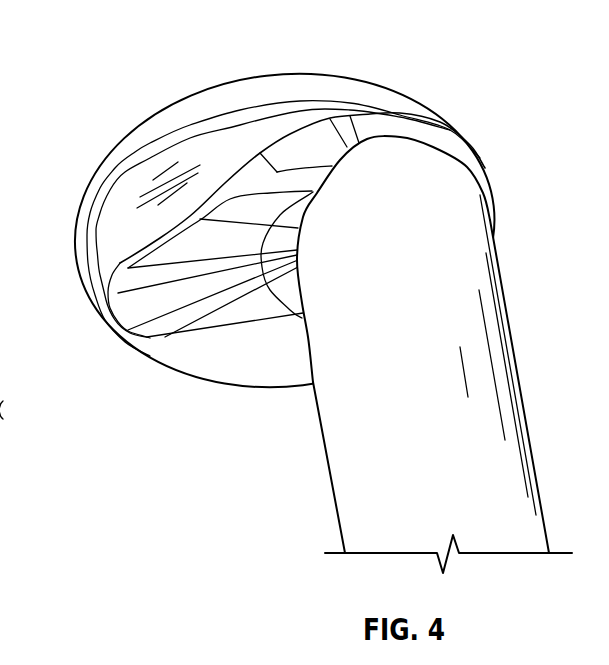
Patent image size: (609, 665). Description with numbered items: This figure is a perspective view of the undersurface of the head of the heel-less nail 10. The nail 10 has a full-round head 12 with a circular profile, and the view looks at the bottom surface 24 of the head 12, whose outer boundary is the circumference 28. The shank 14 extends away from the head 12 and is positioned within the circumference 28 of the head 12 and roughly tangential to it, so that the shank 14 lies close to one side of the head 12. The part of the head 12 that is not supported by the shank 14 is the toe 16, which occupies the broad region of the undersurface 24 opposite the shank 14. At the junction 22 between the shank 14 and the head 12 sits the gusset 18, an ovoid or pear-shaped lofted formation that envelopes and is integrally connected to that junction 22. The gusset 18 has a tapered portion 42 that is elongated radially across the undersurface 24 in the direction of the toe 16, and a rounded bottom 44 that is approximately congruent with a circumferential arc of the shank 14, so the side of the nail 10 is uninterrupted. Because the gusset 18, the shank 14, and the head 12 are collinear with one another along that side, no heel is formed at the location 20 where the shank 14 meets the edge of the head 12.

The heel-less nail 10 is at (88, 70).
The head 12 is at (305, 97).
The shank 14 is at (353, 468).
The toe 16 is at (115, 255).
The gusset 18 is at (312, 163).
The heel 20 is at (483, 163).
The junction 22 is at (322, 237).
The bottom surface 24 is at (127, 213).
The circumference 28 is at (228, 97).
The tapered portion 42 is at (148, 292).
The rounded bottom 44 is at (447, 167).